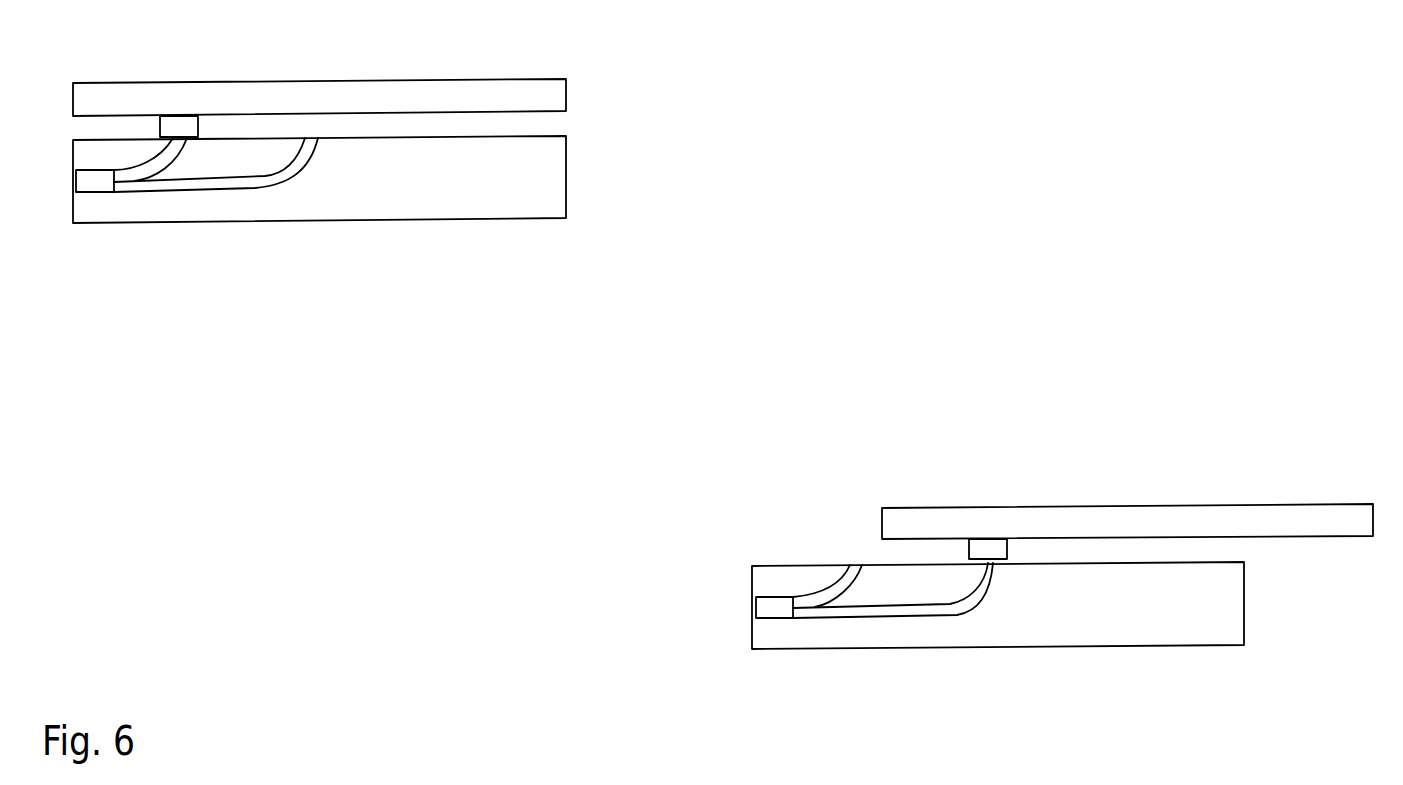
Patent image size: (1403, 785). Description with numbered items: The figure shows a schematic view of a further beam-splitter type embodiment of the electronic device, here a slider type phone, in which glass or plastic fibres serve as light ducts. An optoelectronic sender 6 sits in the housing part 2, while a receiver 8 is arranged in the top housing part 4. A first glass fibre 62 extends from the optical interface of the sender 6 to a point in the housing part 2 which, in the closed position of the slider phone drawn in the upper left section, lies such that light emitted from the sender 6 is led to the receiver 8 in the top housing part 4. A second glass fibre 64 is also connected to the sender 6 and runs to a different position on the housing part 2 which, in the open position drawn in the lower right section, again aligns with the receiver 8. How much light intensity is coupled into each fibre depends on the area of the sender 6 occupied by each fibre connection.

The housing part 2 is at (442, 198).
The top housing part 4 is at (437, 93).
The sender 6 is at (95, 183).
The receiver 8 is at (178, 125).
The first glass fibre 62 is at (138, 181).
The second glass fibre 64 is at (270, 181).